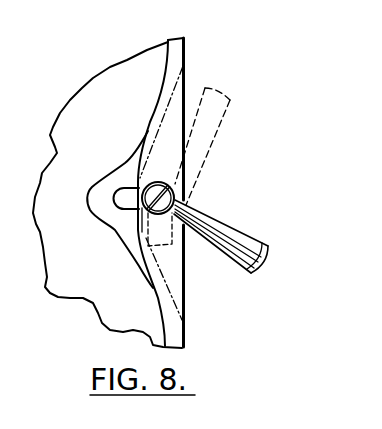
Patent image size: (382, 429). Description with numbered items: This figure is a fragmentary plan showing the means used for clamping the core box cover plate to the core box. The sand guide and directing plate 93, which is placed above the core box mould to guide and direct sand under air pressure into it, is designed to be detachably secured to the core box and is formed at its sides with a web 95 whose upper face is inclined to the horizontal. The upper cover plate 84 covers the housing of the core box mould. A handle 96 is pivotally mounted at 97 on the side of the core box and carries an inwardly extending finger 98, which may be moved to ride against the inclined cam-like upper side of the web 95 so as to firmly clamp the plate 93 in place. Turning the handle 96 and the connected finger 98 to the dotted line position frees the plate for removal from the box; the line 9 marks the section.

The section line 9- 9 is at (185, 62).
The upper cover plate 84 is at (174, 101).
The sand guide and directing plate 93 is at (57, 275).
The web 95 is at (127, 174).
The handle 96 is at (191, 212).
The pivot 97 is at (176, 192).
The inwardly extending finger 98 is at (123, 198).